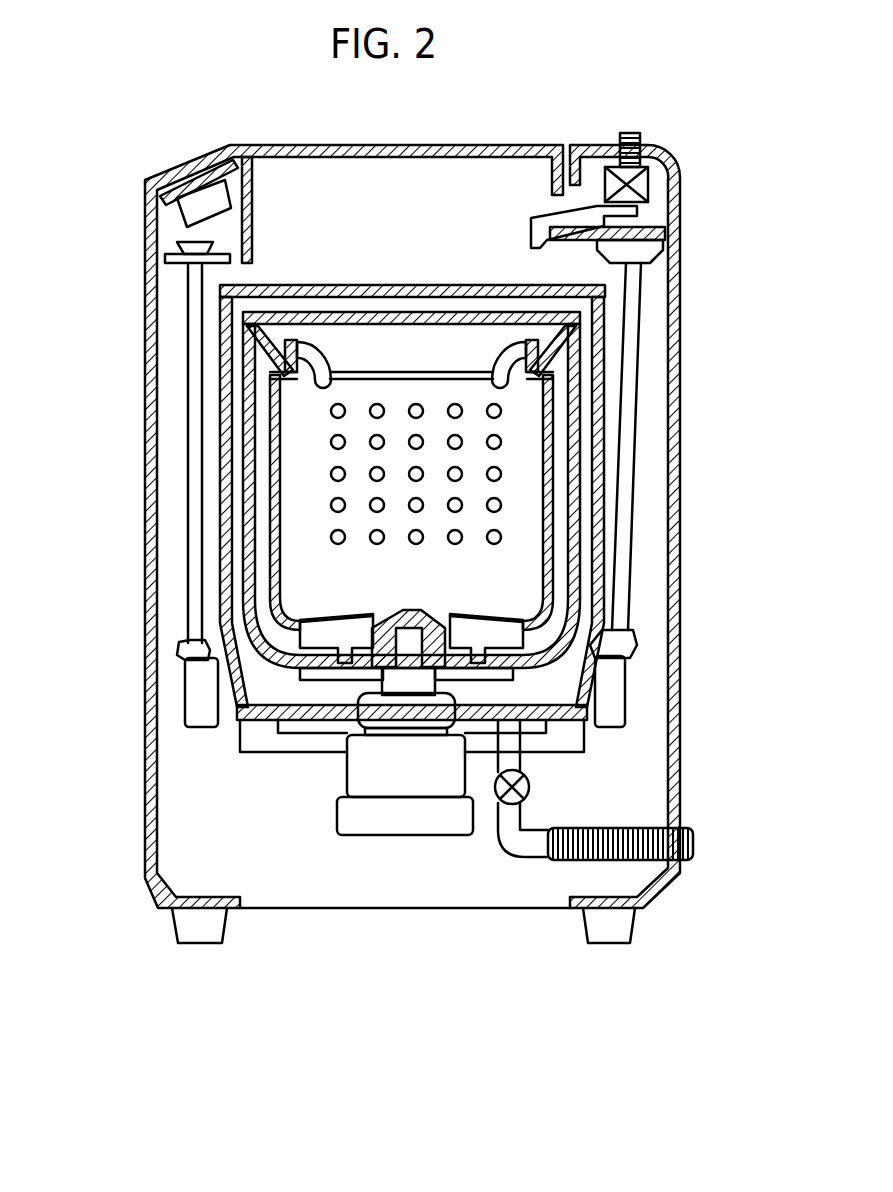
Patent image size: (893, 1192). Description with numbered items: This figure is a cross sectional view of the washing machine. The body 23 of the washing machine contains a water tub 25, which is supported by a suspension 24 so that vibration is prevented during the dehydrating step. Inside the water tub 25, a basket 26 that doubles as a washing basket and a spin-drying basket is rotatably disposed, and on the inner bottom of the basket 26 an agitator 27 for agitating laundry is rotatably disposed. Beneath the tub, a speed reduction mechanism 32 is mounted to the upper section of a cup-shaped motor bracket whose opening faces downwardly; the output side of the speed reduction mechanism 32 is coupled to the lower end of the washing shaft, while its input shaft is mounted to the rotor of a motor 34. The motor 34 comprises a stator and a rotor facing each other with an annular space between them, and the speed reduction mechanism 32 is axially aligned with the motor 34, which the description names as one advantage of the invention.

The body 23 is at (677, 287).
The suspension 24 is at (635, 357).
The water tub 25 is at (603, 500).
The basket 26 is at (580, 450).
The agitator 27 is at (480, 627).
The speed reduction mechanism 32 is at (412, 732).
The motor 34 is at (367, 772).